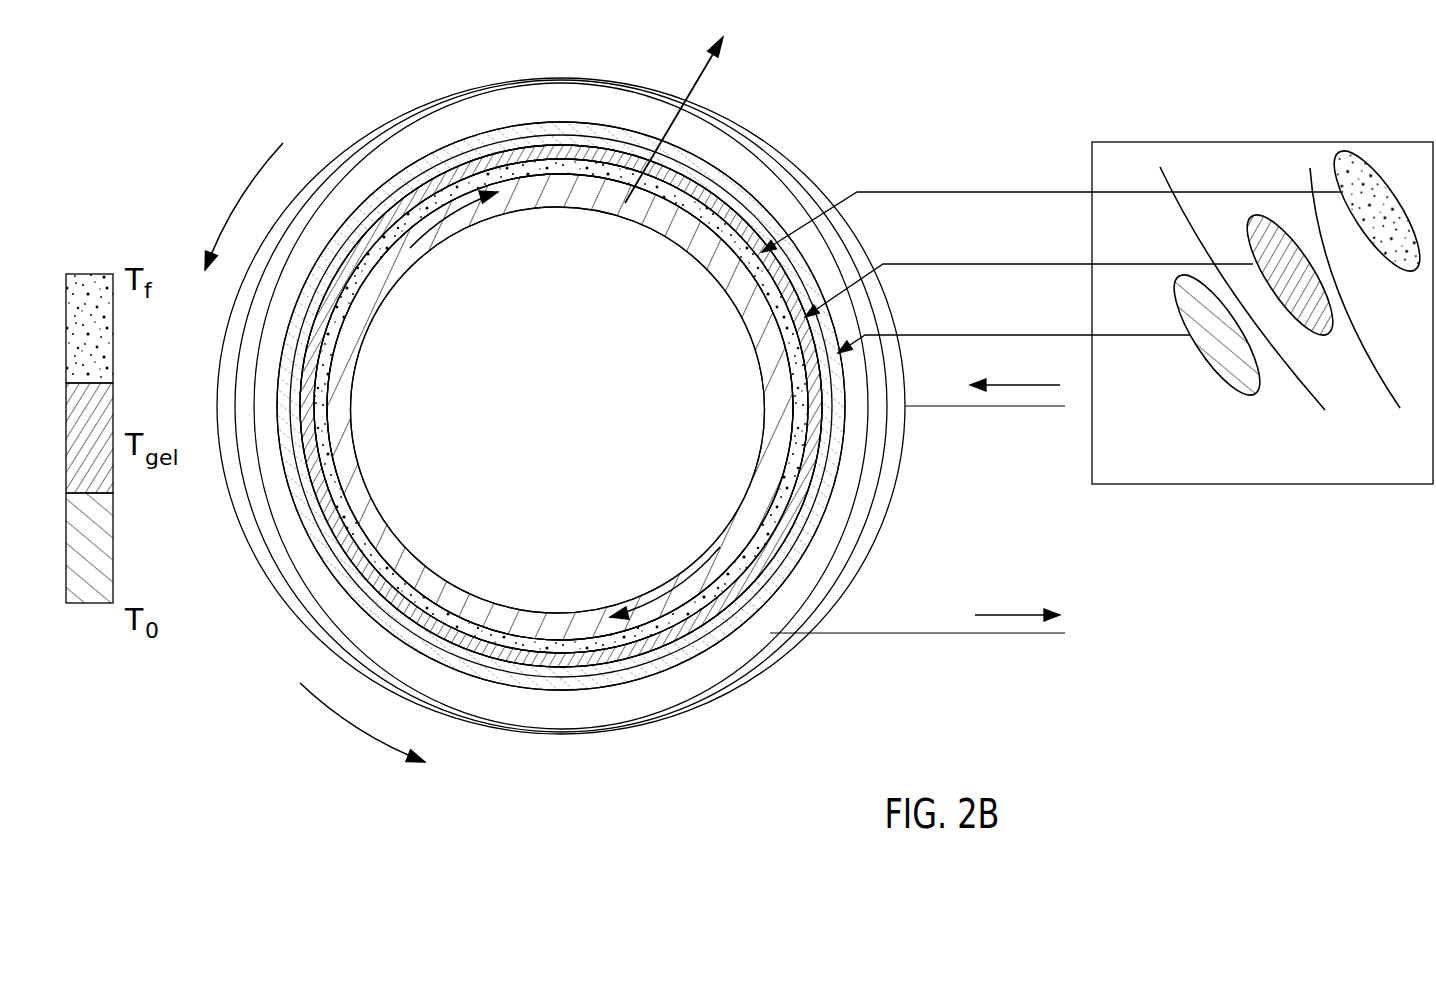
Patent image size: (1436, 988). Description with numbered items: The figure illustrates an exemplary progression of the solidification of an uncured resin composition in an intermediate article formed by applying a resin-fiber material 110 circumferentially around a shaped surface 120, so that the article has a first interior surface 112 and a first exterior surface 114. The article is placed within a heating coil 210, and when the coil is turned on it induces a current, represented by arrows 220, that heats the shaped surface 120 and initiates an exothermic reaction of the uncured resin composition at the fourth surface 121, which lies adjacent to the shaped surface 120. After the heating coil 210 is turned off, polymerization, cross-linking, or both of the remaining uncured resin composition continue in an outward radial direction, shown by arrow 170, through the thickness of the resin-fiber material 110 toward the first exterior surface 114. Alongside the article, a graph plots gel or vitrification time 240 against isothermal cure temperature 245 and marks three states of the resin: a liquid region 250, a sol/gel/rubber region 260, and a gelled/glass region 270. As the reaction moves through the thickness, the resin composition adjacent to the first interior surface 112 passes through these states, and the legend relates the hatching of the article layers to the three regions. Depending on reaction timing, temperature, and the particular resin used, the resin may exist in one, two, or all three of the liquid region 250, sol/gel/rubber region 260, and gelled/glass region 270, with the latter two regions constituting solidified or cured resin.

The resin-fiber material 110 is at (294, 463).
The first interior surface 112 is at (560, 184).
The first exterior surface 114 is at (457, 138).
The shaped surface 120 is at (417, 583).
The fourth surface 121 is at (423, 210).
The arrow 170 is at (703, 73).
The heating coil 210 is at (745, 682).
The arrows 220 is at (248, 186).
The gel or vitrification time 240 is at (1262, 333).
The isothermal cure temperature 245 is at (1052, 272).
The liquid region 250 is at (1217, 335).
The sol/gel/rubber region 260 is at (1290, 275).
The gelled/glass region 270 is at (1377, 211).